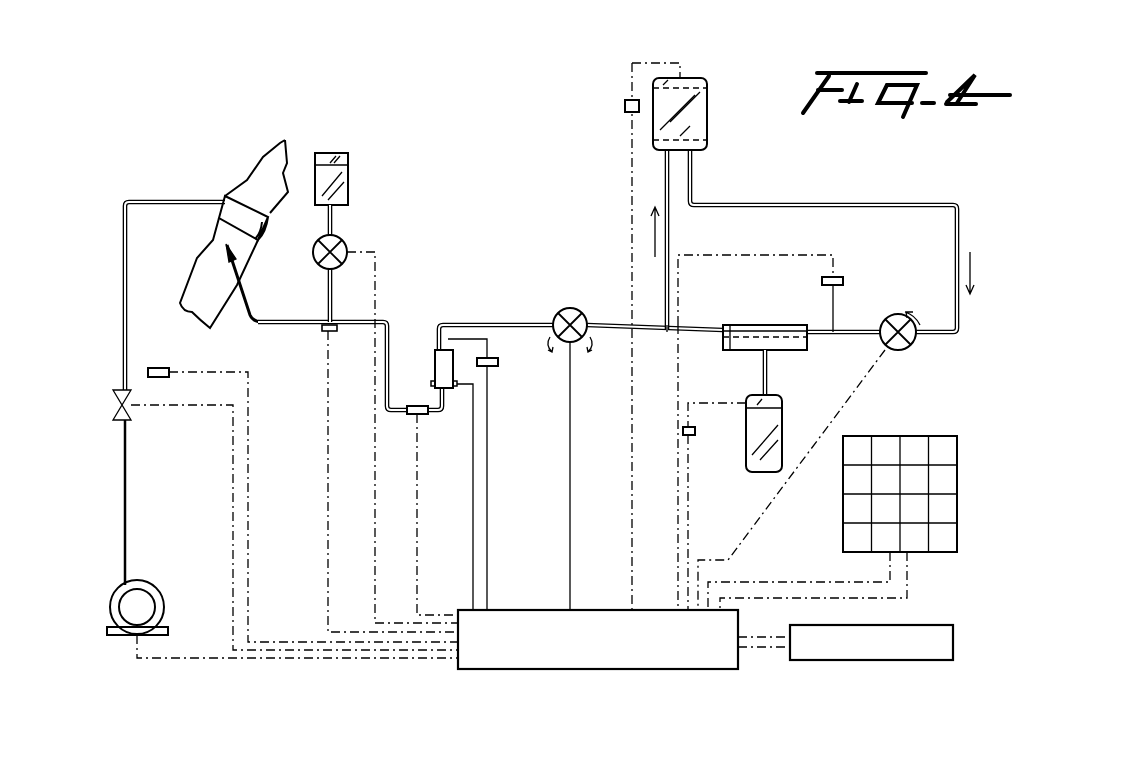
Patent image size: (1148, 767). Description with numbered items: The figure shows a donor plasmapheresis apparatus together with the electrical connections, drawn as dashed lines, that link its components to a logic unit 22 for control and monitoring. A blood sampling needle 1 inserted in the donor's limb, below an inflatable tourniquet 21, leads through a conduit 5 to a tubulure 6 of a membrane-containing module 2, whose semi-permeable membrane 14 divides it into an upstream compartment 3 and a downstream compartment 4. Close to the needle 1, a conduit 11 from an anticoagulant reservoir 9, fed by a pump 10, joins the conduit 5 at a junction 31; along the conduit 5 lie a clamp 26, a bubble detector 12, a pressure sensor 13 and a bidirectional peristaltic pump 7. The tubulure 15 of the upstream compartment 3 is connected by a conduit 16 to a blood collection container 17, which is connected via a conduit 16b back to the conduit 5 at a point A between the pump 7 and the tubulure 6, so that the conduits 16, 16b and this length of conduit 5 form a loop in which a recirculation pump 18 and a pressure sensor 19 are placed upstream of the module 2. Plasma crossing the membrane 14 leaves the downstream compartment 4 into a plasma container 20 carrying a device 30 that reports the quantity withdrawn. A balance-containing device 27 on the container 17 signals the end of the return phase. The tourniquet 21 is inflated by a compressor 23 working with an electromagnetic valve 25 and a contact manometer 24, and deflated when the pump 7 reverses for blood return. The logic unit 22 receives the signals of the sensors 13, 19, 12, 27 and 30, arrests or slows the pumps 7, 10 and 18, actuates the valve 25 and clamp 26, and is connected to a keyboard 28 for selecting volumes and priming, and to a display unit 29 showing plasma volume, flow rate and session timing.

The device for withdrawal of blood 1 is at (236, 258).
The module 2 is at (775, 348).
The upstream compartment 3 is at (752, 333).
The downstream compartment 4 is at (736, 344).
The conduit 5 is at (387, 380).
The tubulure 6 is at (723, 327).
The pump 7 is at (570, 311).
The reservoir 9 is at (348, 158).
The pump 10 is at (348, 244).
The conduit 11 is at (333, 303).
The bubble detector 12 is at (434, 356).
The pressure sensor 13 is at (498, 363).
The semi-permeable membrane 14 is at (752, 338).
The tubulure 15 is at (803, 350).
The conduit 16 is at (815, 205).
The conduit 16b is at (670, 233).
The container 17 is at (700, 78).
The pump 18 is at (915, 340).
The pressure sensor 19 is at (843, 281).
The container 20 is at (782, 414).
The tourniquet 21 is at (232, 197).
The logic unit 22 is at (598, 639).
The compressor 23 is at (156, 592).
The contact manometer 24 is at (160, 368).
The electromagnetic valve 25 is at (131, 410).
The clamp 26 is at (414, 418).
The balance-containing device 27 is at (625, 106).
The keyboard 28 is at (934, 437).
The display unit 29 is at (918, 626).
The device 30 is at (695, 431).
The junction 31 is at (337, 331).
The point A is at (667, 330).